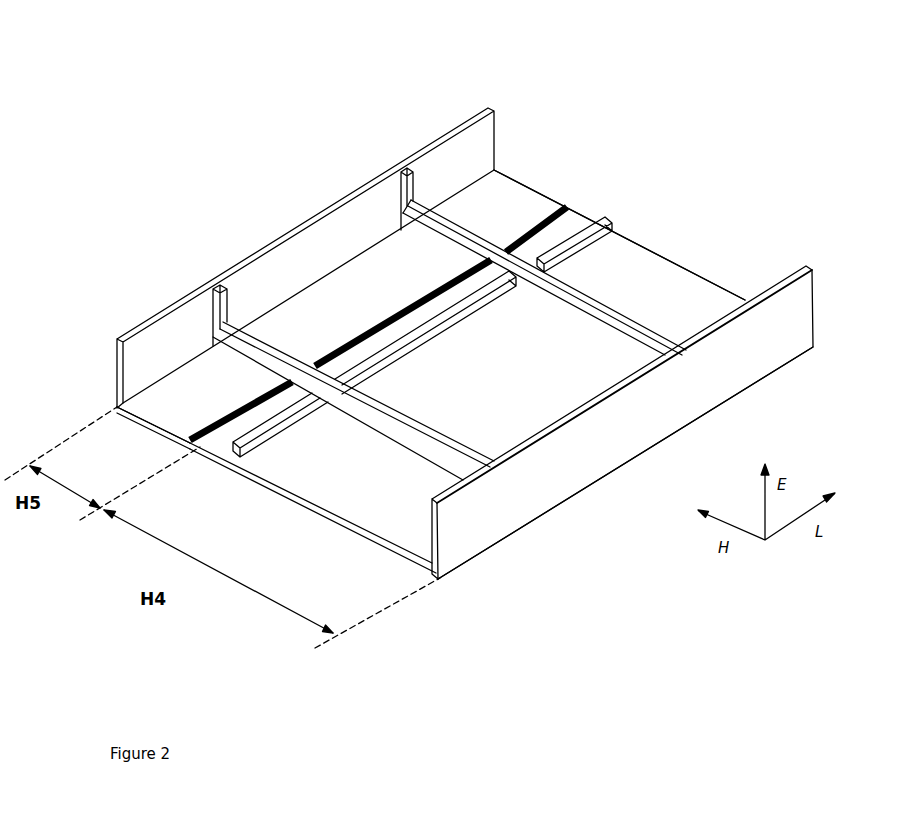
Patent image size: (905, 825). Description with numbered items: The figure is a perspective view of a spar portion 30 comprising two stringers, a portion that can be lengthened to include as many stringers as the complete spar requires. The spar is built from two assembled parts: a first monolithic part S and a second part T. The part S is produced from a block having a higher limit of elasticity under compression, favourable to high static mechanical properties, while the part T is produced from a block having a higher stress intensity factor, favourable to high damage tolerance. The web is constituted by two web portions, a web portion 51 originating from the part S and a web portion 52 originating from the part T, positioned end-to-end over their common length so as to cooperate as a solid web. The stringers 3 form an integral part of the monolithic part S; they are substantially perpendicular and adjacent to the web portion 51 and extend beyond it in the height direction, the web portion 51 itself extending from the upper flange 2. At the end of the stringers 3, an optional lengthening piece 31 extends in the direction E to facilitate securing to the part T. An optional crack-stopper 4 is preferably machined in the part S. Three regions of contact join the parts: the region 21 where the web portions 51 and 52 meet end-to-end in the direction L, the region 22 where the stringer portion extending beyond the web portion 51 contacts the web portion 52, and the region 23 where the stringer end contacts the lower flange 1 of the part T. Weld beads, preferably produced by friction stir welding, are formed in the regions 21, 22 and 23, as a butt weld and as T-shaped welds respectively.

The lower flange 1 is at (458, 165).
The upper flange 2 is at (725, 320).
The stringer 3 is at (458, 223).
The crack-stopper 4 is at (567, 237).
The contact region 21 is at (385, 310).
The contact region 22 is at (388, 318).
The contact region 23 is at (432, 243).
The spar portion 30 is at (670, 235).
The lengthening piece 31 is at (402, 168).
The web portion 51 is at (357, 493).
The web portion 52 is at (343, 308).
The second part T is at (182, 387).
The first monolithic part S is at (392, 513).